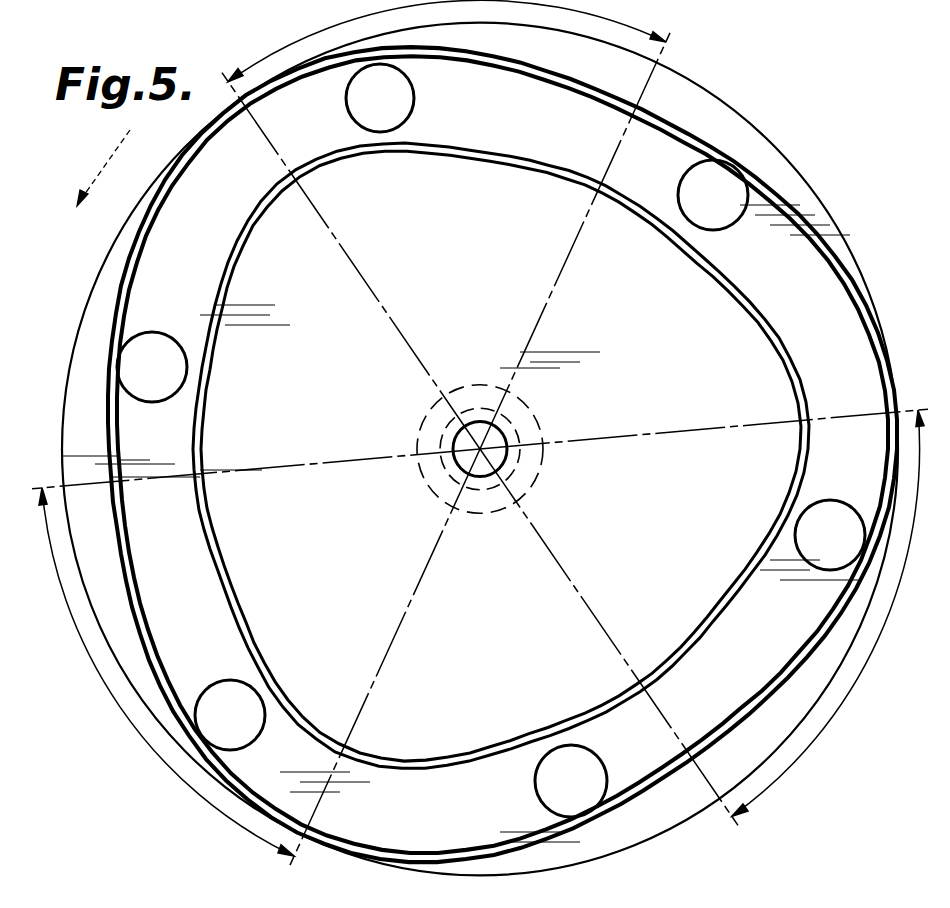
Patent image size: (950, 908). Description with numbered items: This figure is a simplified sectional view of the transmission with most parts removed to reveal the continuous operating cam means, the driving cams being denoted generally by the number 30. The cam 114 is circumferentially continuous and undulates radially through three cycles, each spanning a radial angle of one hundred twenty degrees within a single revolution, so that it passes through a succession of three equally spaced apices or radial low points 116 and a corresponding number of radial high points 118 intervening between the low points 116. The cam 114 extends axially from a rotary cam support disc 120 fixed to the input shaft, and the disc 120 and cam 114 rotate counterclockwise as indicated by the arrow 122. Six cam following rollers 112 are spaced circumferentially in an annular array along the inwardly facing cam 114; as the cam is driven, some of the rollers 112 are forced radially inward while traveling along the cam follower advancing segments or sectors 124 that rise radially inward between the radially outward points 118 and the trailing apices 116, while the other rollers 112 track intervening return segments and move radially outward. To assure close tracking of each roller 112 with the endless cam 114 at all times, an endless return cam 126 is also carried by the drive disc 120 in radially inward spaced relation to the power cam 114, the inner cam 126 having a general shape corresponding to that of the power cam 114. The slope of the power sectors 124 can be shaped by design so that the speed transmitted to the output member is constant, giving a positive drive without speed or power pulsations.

The driving cams 30 is at (730, 156).
The cam follower roller 112 is at (415, 99).
The cam 114 is at (190, 740).
The radial low points 116 is at (632, 112).
The radial high points 118 is at (238, 108).
The rotary cam support disc 120 is at (128, 682).
The arrow 122 is at (104, 162).
The cam follower advancing segments 124 is at (286, 48).
The return cam 126 is at (540, 163).